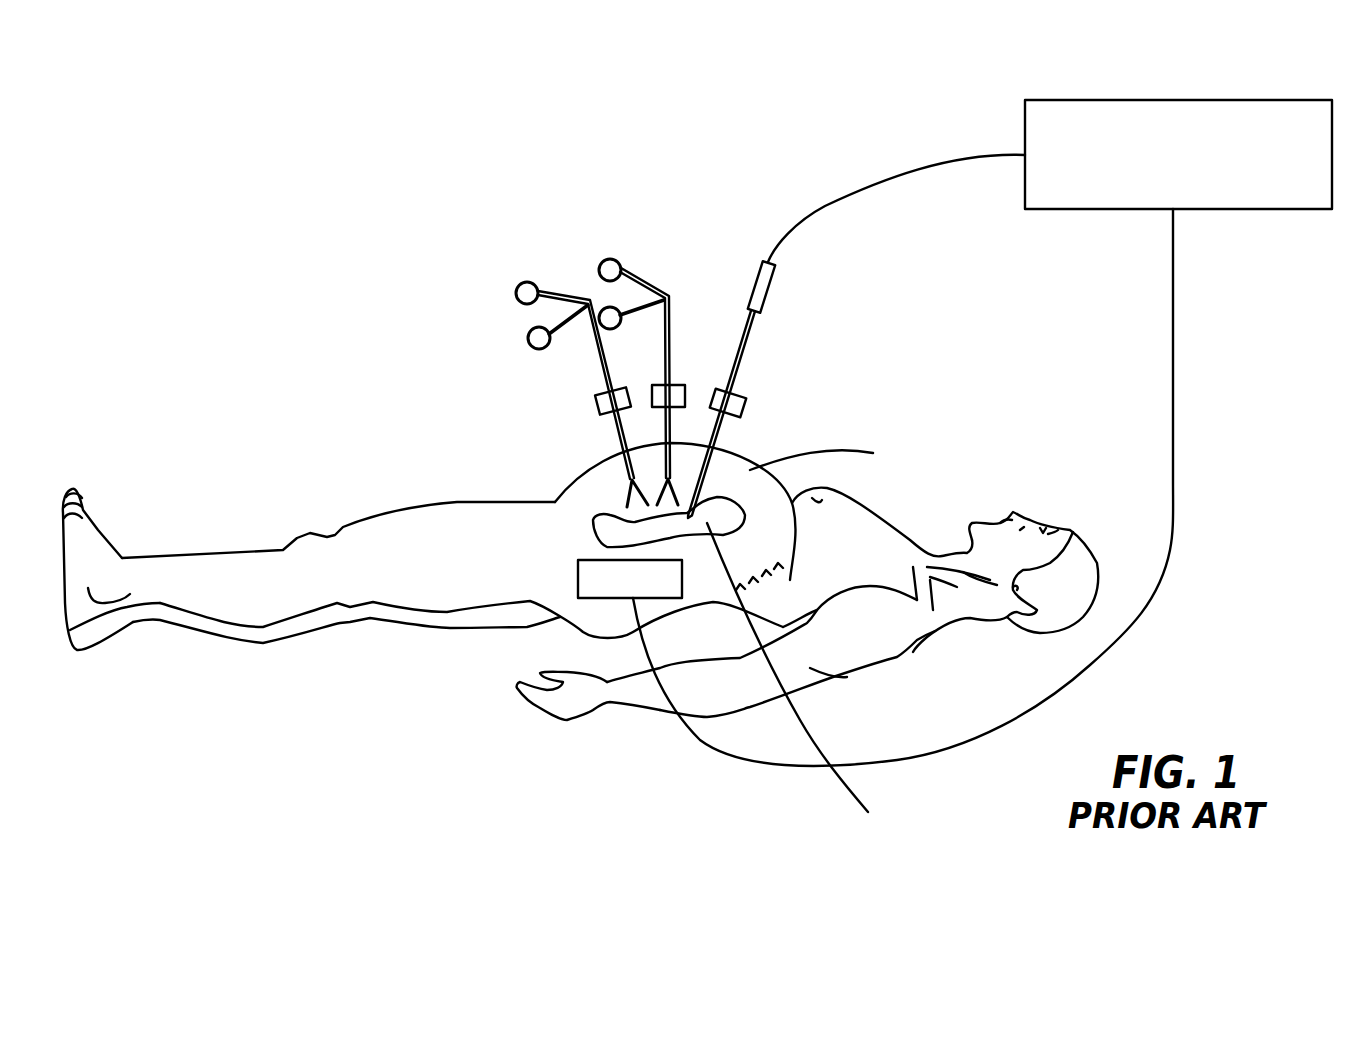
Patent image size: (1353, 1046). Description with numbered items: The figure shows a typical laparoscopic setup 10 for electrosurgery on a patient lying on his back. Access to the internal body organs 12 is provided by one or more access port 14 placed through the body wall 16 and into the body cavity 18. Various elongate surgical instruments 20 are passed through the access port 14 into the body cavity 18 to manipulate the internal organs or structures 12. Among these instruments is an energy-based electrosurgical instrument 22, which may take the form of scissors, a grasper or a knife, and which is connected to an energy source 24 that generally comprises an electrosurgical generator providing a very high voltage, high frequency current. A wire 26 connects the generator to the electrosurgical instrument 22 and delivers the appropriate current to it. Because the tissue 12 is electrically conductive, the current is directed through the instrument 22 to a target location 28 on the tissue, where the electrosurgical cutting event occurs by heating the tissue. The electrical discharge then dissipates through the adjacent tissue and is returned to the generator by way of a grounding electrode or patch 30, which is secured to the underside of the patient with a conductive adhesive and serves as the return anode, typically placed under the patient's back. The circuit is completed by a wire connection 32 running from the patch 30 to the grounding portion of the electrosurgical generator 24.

The laparoscopic setup 10 is at (440, 362).
The internal body organs 12 is at (593, 527).
The access port 14 is at (685, 387).
The body wall 16 is at (553, 473).
The body cavity 18 is at (833, 458).
The elongate surgical instruments 20 is at (632, 273).
The electrosurgical instrument 22 is at (772, 280).
The energy source 24 is at (1218, 209).
The wire 26 is at (917, 168).
The target location 28 is at (807, 685).
The grounding electrode patch 30 is at (590, 593).
The wire connection 32 is at (727, 753).